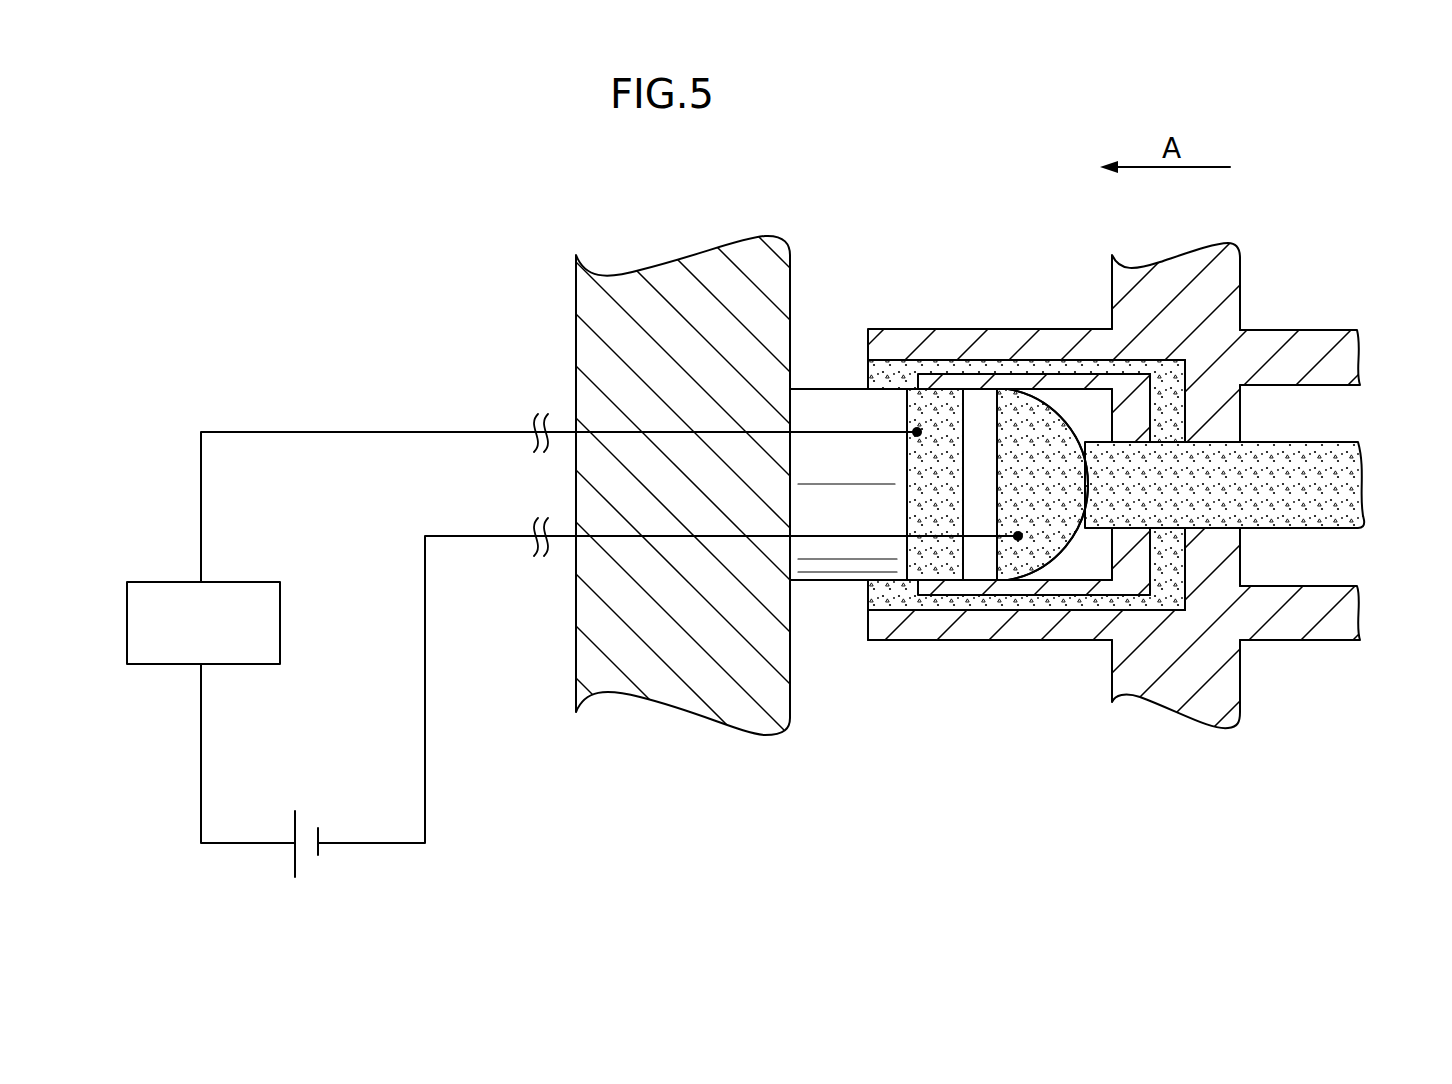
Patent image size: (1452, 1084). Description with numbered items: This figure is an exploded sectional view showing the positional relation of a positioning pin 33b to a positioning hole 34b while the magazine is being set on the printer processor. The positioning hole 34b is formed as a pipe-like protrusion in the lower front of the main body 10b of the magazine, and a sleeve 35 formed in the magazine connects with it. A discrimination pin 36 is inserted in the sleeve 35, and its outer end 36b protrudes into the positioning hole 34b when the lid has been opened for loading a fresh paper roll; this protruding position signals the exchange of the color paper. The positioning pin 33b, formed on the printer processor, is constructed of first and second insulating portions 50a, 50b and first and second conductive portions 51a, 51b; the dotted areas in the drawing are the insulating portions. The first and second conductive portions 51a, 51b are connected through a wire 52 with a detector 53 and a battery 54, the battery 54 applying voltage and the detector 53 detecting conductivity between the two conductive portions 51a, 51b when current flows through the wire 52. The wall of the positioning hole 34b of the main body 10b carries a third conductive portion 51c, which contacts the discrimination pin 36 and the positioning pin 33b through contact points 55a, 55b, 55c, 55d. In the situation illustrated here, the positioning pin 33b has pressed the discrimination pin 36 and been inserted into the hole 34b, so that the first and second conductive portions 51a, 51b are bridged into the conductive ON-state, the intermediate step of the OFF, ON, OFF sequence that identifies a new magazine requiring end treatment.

The main body 10b is at (1177, 690).
The sleeve 35 is at (1297, 330).
The discrimination pin 36 is at (1335, 488).
The outer end 36b is at (1083, 478).
The positioning hole 34b is at (1078, 572).
The positioning pin 33b is at (836, 581).
The first insulating portion 50a is at (974, 575).
The second insulating portion 50b is at (828, 405).
The first conductive portion 51a is at (1022, 435).
The second conductive portion 51b is at (943, 405).
The third conductive portion 51c is at (1083, 592).
The wire 52 is at (464, 432).
The detector 53 is at (280, 636).
The battery 54 is at (320, 850).
The contact point 55a is at (1168, 441).
The contact point 55b is at (1166, 528).
The contact point 55c is at (912, 385).
The contact point 55d is at (912, 598).